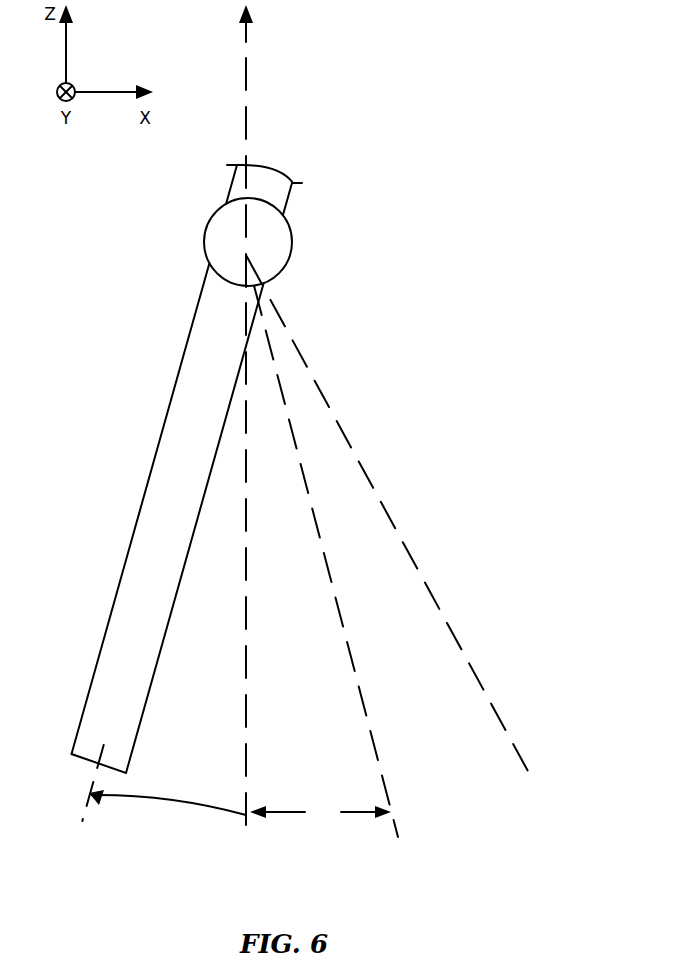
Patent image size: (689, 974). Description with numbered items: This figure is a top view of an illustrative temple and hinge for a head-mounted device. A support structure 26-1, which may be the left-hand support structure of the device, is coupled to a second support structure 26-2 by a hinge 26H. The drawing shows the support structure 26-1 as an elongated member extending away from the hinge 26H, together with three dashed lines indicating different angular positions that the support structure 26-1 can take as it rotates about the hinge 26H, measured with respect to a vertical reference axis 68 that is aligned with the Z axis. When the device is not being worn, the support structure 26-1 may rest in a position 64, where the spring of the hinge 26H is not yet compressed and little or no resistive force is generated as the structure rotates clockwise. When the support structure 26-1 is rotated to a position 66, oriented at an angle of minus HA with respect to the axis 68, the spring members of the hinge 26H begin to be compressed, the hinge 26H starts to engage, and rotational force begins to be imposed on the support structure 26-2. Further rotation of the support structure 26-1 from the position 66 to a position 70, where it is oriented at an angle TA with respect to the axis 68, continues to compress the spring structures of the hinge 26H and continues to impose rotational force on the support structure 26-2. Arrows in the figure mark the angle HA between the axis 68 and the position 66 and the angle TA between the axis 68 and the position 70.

The support structure 26-1 is at (186, 364).
The support structure 26-2 is at (242, 182).
The hinge 26H is at (212, 238).
The position 64 is at (515, 750).
The position 66 is at (395, 806).
The axis 68 is at (247, 827).
The position 70 is at (88, 792).
The angle TA is at (167, 816).
The angle HA is at (320, 812).